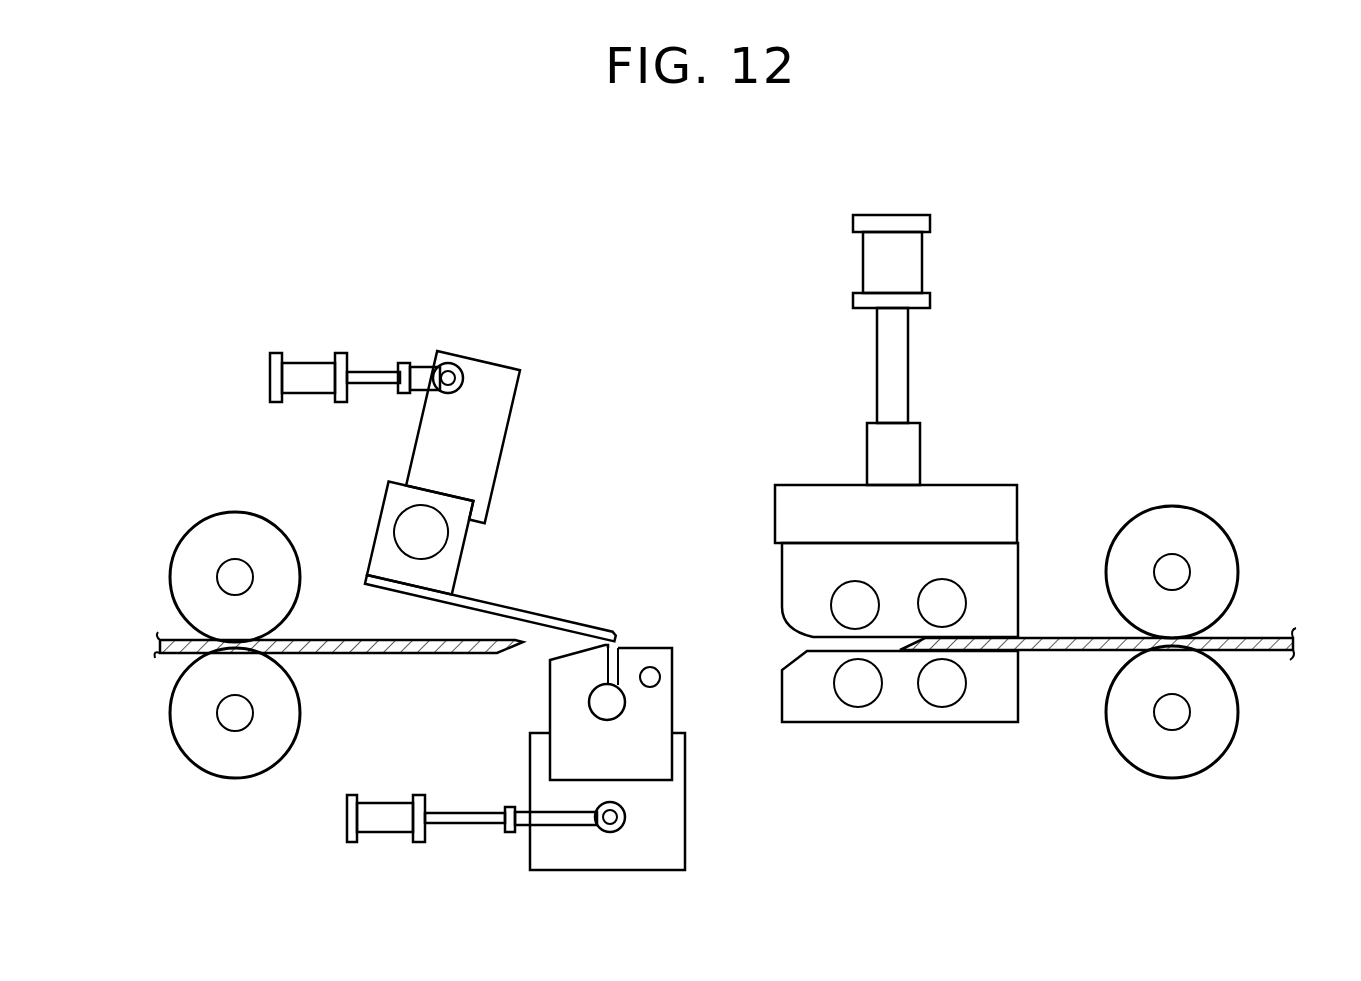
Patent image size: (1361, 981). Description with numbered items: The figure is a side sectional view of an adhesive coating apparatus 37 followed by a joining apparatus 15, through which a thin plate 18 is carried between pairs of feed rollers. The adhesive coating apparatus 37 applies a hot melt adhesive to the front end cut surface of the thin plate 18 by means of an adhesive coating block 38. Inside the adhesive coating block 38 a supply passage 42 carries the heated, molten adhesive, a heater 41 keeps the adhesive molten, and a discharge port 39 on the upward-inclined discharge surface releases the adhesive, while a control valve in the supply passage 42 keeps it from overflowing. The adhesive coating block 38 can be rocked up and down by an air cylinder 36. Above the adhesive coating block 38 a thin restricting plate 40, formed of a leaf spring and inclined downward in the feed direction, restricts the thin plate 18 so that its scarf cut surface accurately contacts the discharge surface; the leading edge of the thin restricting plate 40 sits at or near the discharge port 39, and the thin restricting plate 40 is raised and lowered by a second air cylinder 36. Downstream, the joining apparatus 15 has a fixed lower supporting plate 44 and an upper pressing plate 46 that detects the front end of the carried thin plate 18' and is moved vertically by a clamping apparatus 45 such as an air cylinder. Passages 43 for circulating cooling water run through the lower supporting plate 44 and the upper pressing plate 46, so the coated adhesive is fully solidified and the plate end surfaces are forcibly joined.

The joining apparatus 15 is at (918, 199).
The thin plate 18 is at (339, 683).
The carried thin plate 18' is at (1109, 589).
The air cylinder 36 is at (372, 356).
The adhesive coating apparatus 37 is at (481, 332).
The adhesive coating block 38 is at (660, 717).
The discharge port 39 is at (618, 648).
The thin restricting plate 40 is at (508, 605).
The heater 41 is at (655, 672).
The supply passage 42 is at (600, 697).
The passages 43 is at (933, 588).
The lower supporting plate 44 is at (996, 705).
The clamping apparatus 45 is at (930, 297).
The upper pressing plate 46 is at (970, 485).